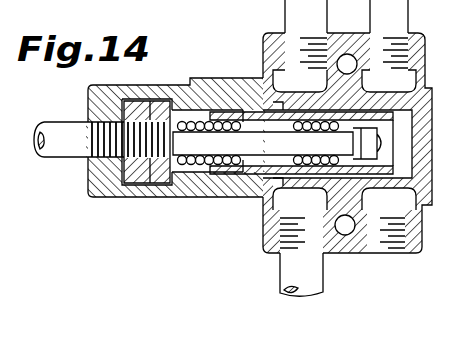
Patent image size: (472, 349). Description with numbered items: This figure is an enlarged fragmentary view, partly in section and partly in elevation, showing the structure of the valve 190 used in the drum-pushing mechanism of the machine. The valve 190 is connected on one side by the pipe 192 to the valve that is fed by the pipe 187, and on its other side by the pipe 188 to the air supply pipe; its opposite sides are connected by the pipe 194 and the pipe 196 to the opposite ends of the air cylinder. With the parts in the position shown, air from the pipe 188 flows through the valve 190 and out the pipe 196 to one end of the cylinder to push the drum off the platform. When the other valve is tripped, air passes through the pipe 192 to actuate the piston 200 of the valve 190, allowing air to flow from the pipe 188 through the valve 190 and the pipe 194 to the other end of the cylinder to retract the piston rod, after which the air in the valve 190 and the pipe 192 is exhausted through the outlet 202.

The pipe 187 is at (252, 0).
The pipe 188 is at (290, 270).
The valve 190 is at (428, 68).
The pipe 192 is at (60, 150).
The pipe 194 is at (397, 2).
The pipe 196 is at (312, 2).
The piston 200 is at (197, 142).
The outlet 202 is at (397, 248).